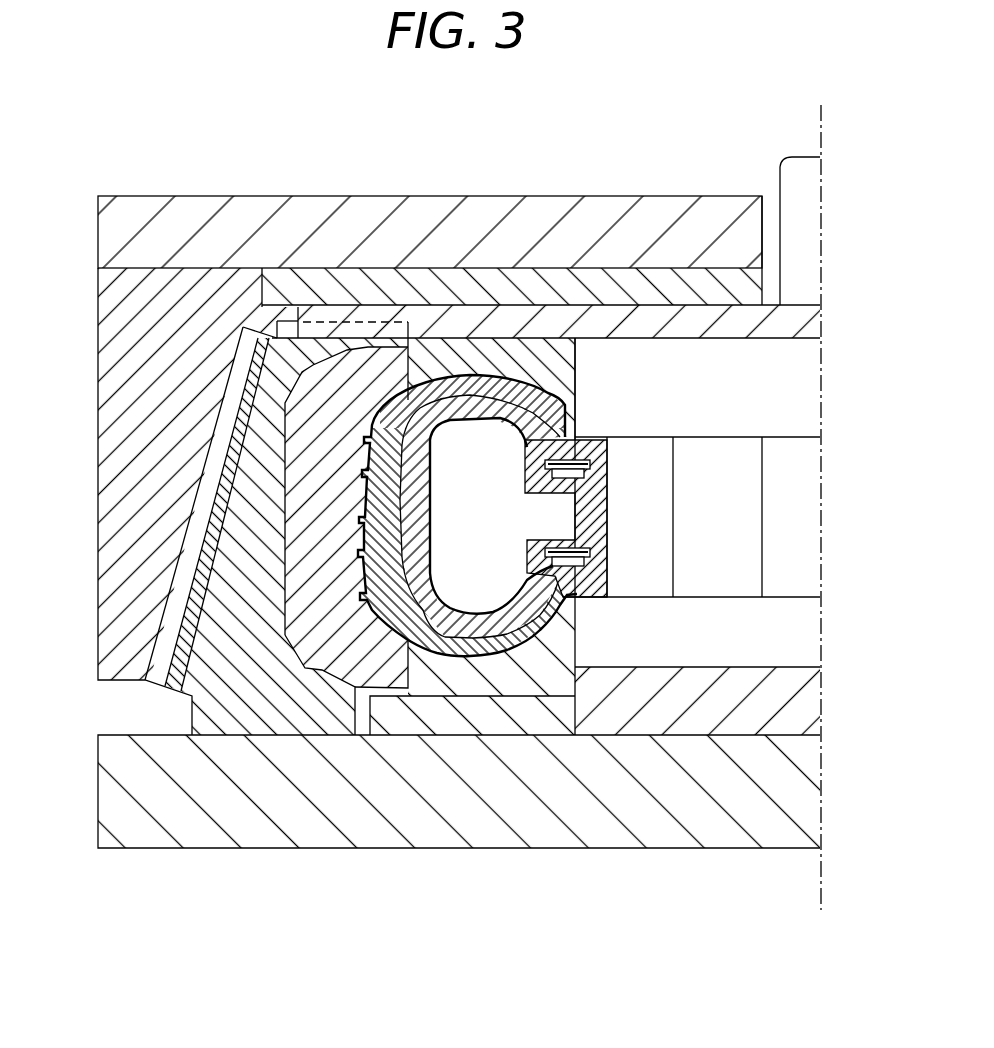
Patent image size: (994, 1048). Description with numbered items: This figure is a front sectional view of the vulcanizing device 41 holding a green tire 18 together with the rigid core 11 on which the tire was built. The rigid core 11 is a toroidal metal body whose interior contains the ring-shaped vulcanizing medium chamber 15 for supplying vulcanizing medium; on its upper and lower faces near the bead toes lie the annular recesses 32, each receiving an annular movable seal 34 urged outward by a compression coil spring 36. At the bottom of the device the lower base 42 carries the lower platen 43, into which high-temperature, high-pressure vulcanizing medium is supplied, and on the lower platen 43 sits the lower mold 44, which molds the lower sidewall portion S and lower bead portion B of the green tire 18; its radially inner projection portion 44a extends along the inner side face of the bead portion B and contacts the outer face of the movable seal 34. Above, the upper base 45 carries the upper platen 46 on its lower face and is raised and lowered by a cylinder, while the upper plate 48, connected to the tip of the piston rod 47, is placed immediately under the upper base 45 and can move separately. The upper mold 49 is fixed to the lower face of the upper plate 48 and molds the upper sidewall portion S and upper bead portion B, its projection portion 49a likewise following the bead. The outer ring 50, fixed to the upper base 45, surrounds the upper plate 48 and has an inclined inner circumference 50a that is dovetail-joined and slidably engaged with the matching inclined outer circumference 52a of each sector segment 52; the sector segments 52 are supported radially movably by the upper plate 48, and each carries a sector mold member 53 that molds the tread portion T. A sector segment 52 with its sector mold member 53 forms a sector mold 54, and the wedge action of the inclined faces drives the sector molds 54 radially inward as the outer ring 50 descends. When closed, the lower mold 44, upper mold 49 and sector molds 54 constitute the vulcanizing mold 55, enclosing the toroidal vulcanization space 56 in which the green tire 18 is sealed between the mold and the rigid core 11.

The rigid core 11 is at (467, 612).
The vulcanizing medium chamber 15 is at (550, 518).
The green tire 18 is at (515, 648).
The annular recess 32 is at (605, 437).
The movable seal 34 is at (593, 466).
The compression coil spring 36 is at (593, 550).
The vulcanizing device 41 is at (527, 184).
The lower base 42 is at (550, 836).
The lower platen 43 is at (690, 680).
The lower mold 44 is at (557, 683).
The projection portion 44a is at (577, 603).
The upper base 45 is at (440, 214).
The upper platen 46 is at (672, 278).
The piston rod 47 is at (783, 172).
The upper plate 48 is at (742, 330).
The upper mold 49 is at (572, 348).
The projection portion 49a is at (577, 418).
The outer ring 50 is at (108, 322).
The inner circumference 50a is at (224, 446).
The sector segment 52 is at (233, 713).
The outer circumference 52a is at (190, 563).
The sector mold member 53 is at (313, 668).
The sector mold 54 is at (372, 715).
The vulcanizing mold 55 is at (452, 336).
The vulcanization space 56 is at (393, 403).
The tread portion T is at (360, 535).
The sidewall portion S is at (483, 378).
The bead portion B is at (543, 400).